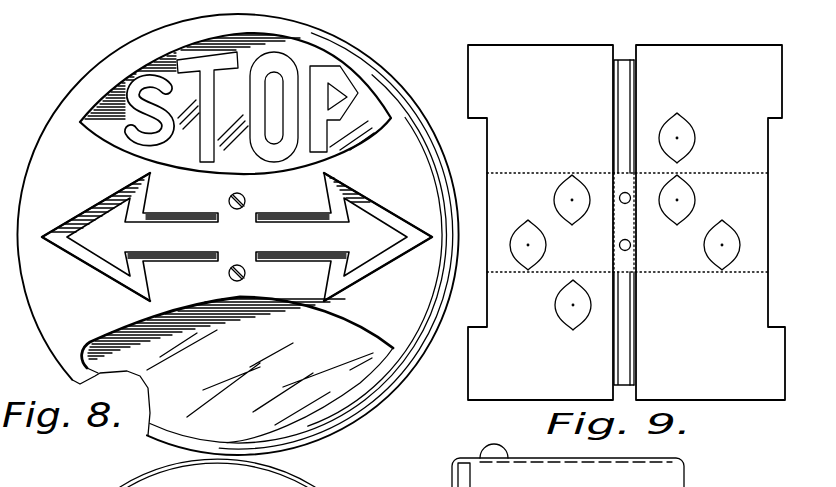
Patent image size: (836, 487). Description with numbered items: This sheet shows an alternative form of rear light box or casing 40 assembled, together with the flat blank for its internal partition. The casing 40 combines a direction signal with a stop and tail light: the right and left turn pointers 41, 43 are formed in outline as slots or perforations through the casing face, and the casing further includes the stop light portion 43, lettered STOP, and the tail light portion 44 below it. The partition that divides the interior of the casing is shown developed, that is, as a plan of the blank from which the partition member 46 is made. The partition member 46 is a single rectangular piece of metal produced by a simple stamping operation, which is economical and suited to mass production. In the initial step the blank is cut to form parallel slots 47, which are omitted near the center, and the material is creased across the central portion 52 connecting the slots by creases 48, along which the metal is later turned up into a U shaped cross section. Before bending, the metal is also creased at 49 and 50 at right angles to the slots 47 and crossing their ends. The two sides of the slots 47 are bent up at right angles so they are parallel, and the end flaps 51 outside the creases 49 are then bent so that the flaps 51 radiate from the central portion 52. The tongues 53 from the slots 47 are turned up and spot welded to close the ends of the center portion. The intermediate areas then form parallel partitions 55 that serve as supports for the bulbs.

In FIG. 8, the rear light box or casing 40 is at (70, 100).
In FIG. 8, the right turn pointer 41 is at (381, 204).
In FIG. 8, the left turn pointer / stop light portion 43 is at (100, 201).
In FIG. 8, the tail light portion 44 is at (325, 398).
In FIG. 9, the partition member 46 is at (497, 398).
In FIG. 9, the parallel slots 47 is at (636, 94).
In FIG. 9, the creases 48 is at (615, 235).
In FIG. 9, the crease 49 is at (743, 152).
In FIG. 9, the crease 50 is at (560, 275).
In FIG. 9, the end flaps 51 is at (627, 218).
In FIG. 9, the central portion 52 is at (621, 186).
In FIG. 9, the tongues 53 is at (636, 109).
In FIG. 9, the parallel partitions 55 is at (547, 200).